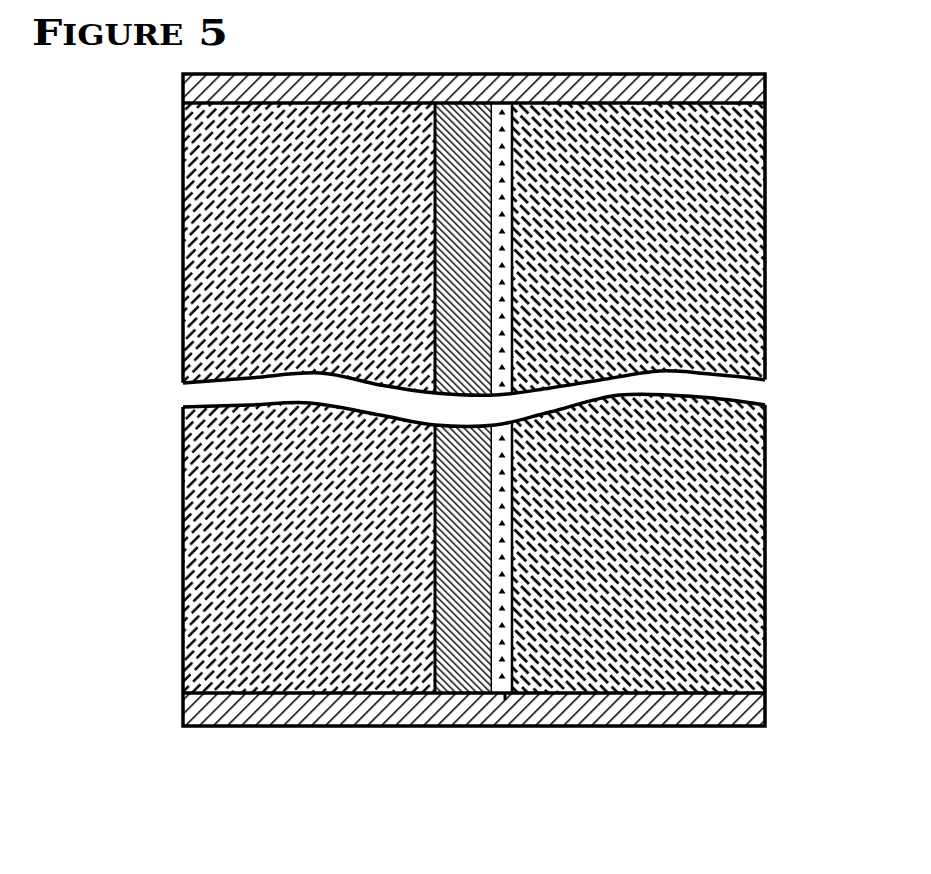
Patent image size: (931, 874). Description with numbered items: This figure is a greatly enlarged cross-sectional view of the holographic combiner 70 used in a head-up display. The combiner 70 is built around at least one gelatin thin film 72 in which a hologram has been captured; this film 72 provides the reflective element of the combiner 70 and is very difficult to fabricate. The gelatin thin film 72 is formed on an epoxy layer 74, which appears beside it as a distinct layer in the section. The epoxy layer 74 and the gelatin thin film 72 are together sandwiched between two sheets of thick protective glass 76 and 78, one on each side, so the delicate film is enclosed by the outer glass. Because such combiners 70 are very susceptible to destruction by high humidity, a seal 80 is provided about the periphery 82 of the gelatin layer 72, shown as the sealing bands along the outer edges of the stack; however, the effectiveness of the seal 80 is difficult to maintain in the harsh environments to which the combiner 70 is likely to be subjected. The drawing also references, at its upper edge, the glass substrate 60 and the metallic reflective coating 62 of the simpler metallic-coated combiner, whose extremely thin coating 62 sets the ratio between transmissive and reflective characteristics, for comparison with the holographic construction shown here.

The glass substrate 60 is at (530, 0).
The metallic reflective coating 62 is at (820, 0).
The holographic combiner 70 is at (172, 678).
The gelatin thin film 72 is at (506, 120).
The epoxy layer 74 is at (465, 73).
The protective glass sheet 76 is at (340, 130).
The protective glass sheet 78 is at (750, 128).
The seal 80 is at (688, 76).
The periphery 82 is at (505, 697).